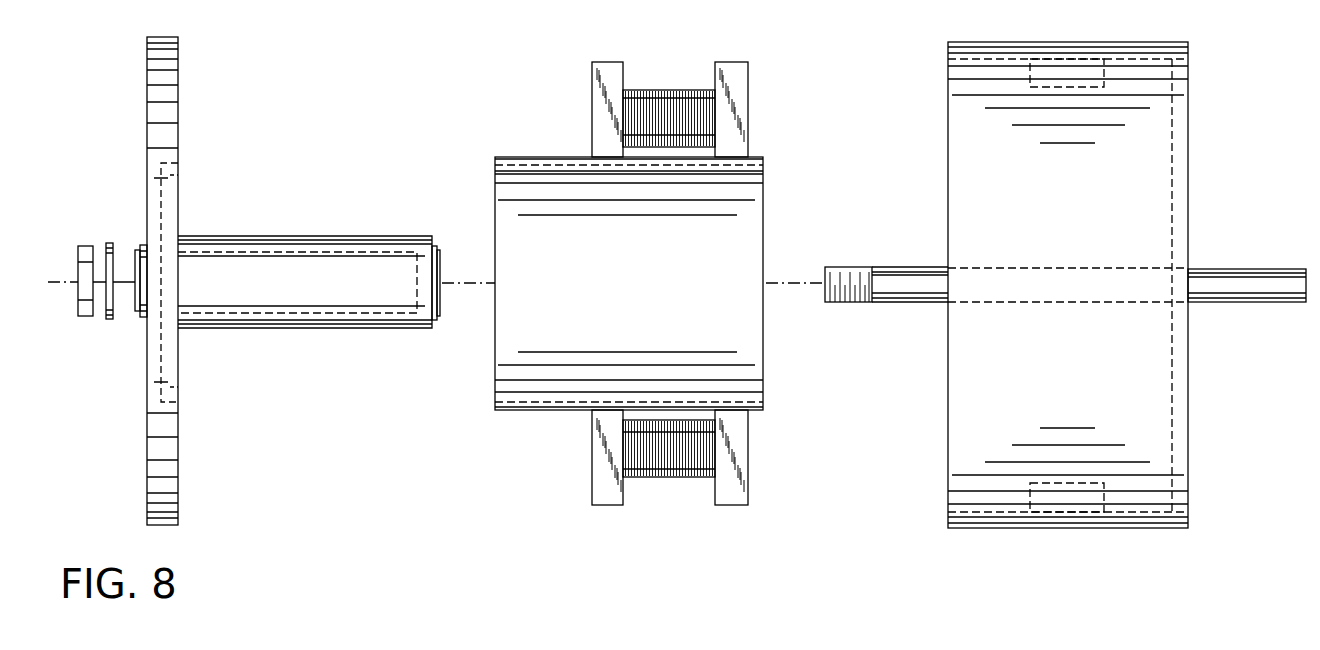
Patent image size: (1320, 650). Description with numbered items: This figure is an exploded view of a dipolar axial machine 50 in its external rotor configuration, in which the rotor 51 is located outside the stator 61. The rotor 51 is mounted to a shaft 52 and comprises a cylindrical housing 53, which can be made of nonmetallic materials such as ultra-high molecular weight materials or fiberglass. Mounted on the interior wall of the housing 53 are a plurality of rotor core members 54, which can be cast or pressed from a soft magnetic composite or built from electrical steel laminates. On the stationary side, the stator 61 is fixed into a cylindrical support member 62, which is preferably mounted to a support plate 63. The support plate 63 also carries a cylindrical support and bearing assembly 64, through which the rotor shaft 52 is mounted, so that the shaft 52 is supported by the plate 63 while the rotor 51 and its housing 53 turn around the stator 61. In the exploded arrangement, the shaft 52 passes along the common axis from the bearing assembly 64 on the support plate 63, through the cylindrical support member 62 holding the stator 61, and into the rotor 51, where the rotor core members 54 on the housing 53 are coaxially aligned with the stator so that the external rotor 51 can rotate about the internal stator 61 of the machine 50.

The dipolar axial machine 50 is at (565, 128).
The rotor 51 is at (1076, 320).
The shaft 52 is at (1227, 293).
The cylindrical housing 53 is at (1185, 478).
The rotor core members 54 is at (1068, 499).
The stator 61 is at (578, 478).
The cylindrical support member 62 is at (535, 363).
The support plate 63 is at (150, 123).
The cylindrical support and bearing assembly 64 is at (297, 244).